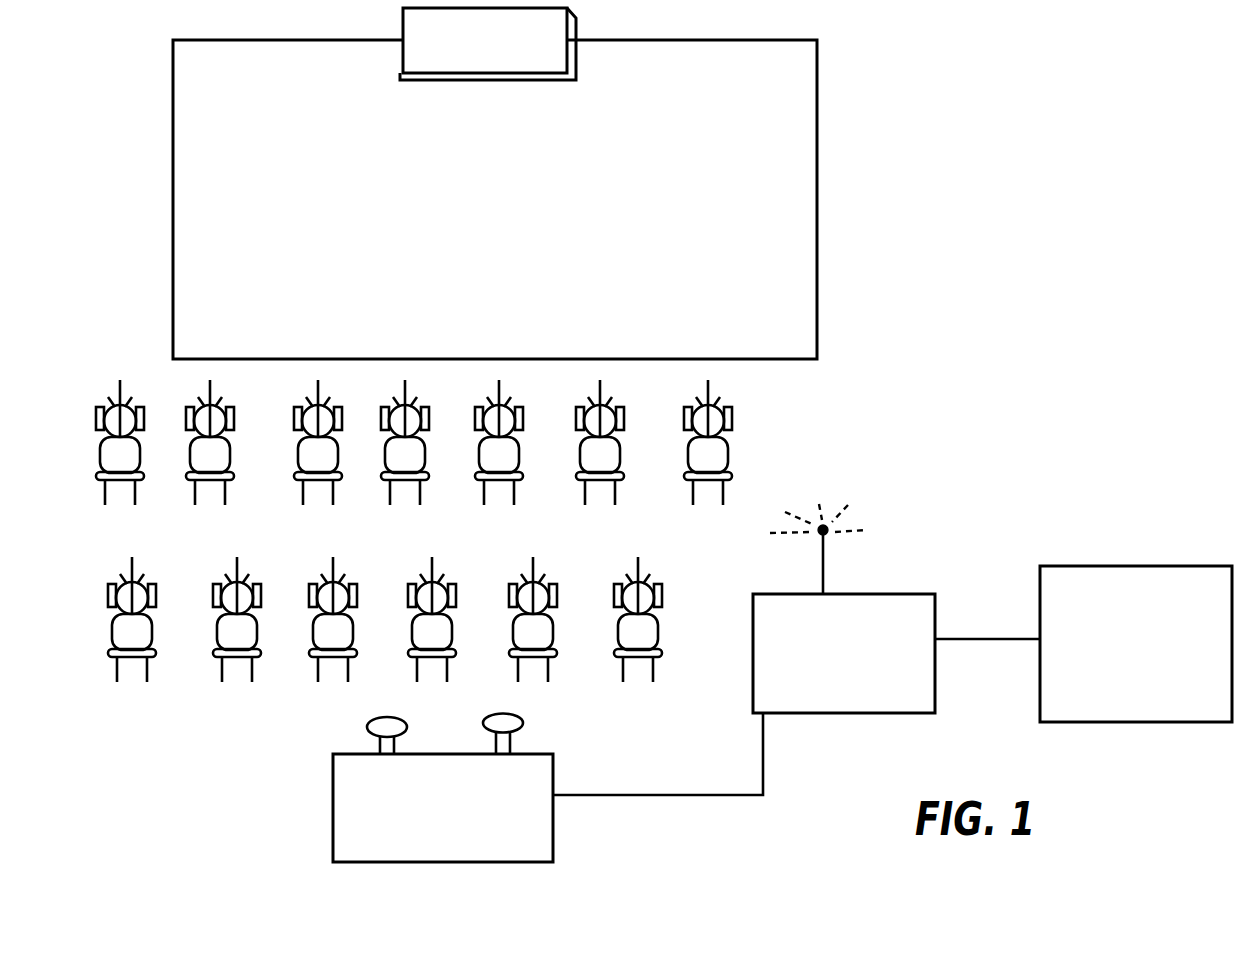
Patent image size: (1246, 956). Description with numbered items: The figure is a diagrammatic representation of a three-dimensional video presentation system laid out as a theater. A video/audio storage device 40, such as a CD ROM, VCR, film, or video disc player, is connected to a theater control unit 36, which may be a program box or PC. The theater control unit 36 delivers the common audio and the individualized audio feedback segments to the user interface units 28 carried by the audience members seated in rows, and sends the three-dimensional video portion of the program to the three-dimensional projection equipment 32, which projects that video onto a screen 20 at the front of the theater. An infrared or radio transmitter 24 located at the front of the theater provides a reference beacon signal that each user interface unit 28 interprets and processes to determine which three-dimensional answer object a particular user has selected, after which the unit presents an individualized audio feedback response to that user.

The screen 20 is at (468, 240).
The infrared or radio transmitter 24 is at (473, 48).
The user interface unit 28 is at (102, 373).
The 3D projection equipment 32 is at (422, 788).
The theater control unit 36 is at (810, 624).
The video/audio storage device 40 is at (1125, 603).